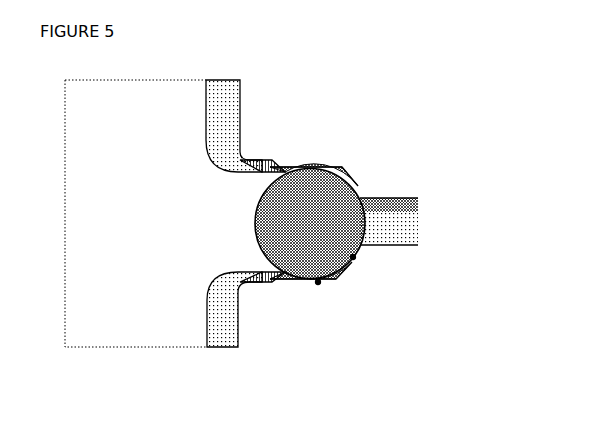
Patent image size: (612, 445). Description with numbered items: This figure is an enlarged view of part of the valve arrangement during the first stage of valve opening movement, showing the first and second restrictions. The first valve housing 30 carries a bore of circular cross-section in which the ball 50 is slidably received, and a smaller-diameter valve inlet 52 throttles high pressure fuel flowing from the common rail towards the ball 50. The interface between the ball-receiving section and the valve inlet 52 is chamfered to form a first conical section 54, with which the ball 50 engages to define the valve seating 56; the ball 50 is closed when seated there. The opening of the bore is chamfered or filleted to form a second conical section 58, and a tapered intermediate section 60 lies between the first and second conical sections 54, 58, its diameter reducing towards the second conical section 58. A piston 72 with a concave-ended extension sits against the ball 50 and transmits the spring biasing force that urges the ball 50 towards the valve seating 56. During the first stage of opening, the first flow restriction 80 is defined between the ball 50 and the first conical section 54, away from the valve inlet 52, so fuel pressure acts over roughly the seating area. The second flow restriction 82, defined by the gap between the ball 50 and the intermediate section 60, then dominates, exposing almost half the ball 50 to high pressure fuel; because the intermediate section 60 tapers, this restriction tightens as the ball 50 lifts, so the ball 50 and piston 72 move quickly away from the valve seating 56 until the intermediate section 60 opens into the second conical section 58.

The first valve housing 30 is at (402, 95).
The ball 50 is at (318, 197).
The valve inlet 52 is at (398, 215).
The first conical section 54 is at (353, 180).
The valve seating 56 is at (358, 250).
The second conical section 58 is at (260, 158).
The intermediate section 60 is at (303, 274).
The piston 72 is at (141, 297).
The first flow restriction 80 is at (356, 262).
The second flow restriction 82 is at (320, 286).